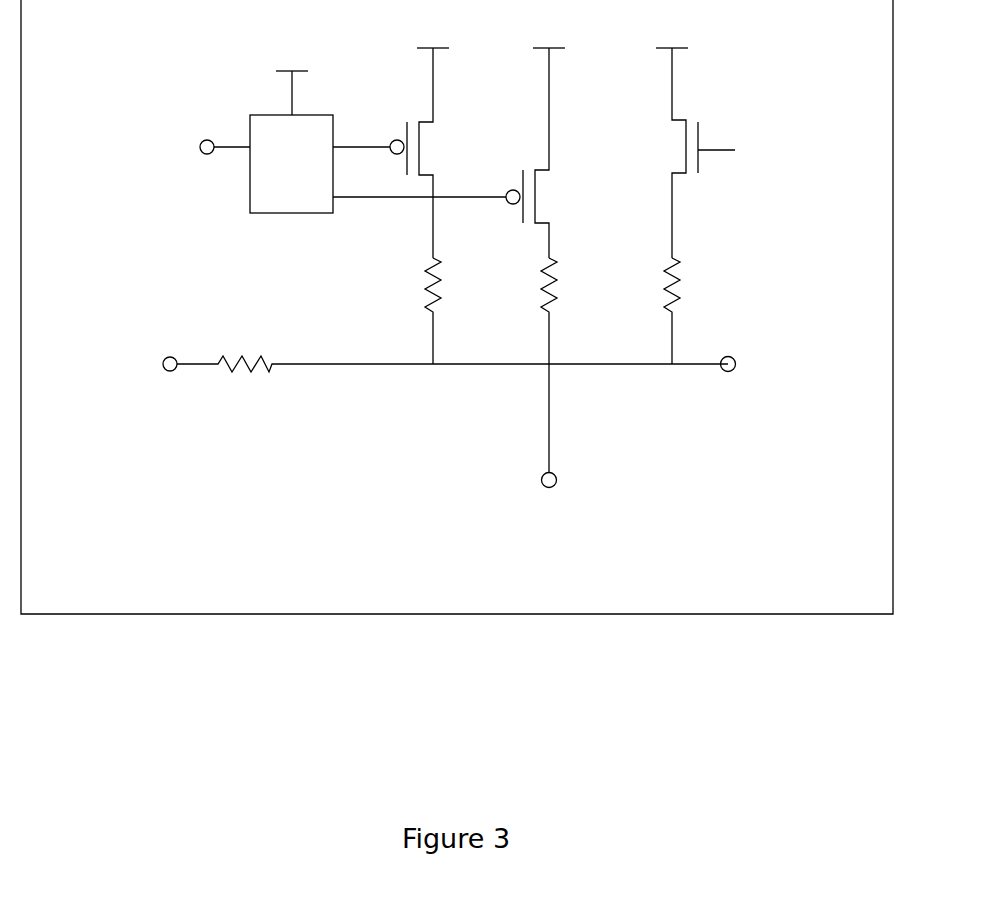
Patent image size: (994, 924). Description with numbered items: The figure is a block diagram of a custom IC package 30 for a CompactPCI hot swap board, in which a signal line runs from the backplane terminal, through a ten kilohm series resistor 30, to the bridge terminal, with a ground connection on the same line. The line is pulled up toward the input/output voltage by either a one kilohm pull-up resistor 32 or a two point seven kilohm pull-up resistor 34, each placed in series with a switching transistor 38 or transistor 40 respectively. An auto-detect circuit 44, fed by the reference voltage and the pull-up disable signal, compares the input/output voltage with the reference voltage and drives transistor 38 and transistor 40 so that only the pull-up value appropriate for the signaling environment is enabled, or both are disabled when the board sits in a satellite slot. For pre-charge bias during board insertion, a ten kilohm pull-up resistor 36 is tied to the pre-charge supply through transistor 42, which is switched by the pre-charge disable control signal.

The custom IC package 30 is at (279, 372).
The 1.0K ohm pull-up resistor 32 is at (446, 256).
The 2.7K ohm pull-up resistor 34 is at (561, 256).
The 10K ohm pull-up resistor 36 is at (685, 256).
The transistor 38 is at (393, 122).
The transistor 40 is at (508, 172).
The transistor 42 is at (711, 122).
The auto-detect circuit 44 is at (278, 226).